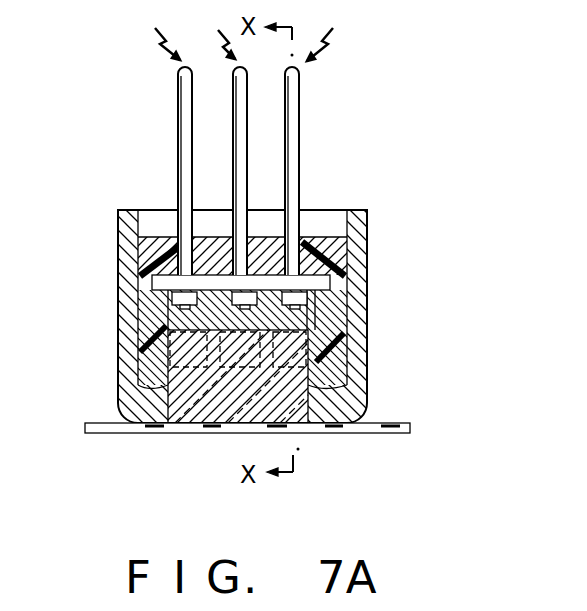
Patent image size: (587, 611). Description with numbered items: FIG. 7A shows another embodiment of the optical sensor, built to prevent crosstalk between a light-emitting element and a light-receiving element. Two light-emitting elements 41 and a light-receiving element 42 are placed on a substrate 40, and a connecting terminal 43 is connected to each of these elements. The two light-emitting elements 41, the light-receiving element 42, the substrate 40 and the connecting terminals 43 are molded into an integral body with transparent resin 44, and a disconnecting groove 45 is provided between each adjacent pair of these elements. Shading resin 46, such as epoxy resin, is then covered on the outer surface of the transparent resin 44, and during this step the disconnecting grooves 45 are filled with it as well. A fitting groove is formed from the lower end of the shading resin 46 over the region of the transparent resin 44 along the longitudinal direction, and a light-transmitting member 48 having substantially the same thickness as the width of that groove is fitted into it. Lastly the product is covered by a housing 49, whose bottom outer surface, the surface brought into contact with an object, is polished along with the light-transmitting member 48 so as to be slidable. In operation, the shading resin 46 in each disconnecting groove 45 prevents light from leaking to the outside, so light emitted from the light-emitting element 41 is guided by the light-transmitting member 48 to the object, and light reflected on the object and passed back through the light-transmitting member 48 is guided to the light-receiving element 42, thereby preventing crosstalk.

The substrate 40 is at (393, 434).
The light-emitting element 41 is at (160, 316).
The light-receiving element 42 is at (170, 338).
The connecting terminal 43 is at (212, 104).
The transparent resin 44 is at (172, 322).
The disconnecting groove 45 is at (213, 293).
The shading resin 46 is at (323, 243).
The light-transmitting member 48 is at (308, 378).
The housing 49 is at (134, 210).